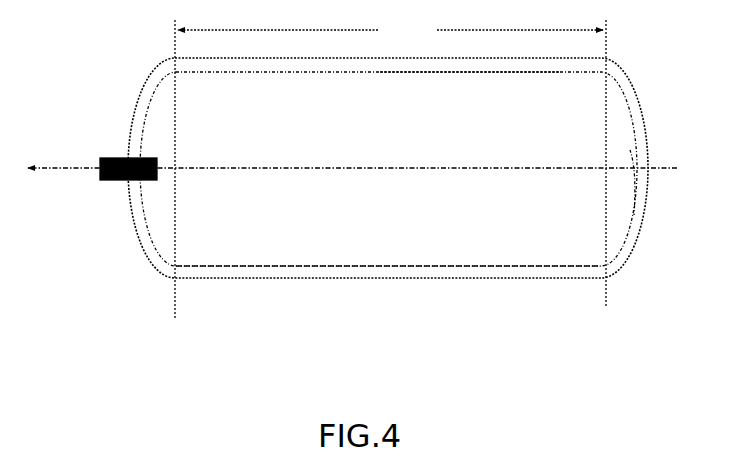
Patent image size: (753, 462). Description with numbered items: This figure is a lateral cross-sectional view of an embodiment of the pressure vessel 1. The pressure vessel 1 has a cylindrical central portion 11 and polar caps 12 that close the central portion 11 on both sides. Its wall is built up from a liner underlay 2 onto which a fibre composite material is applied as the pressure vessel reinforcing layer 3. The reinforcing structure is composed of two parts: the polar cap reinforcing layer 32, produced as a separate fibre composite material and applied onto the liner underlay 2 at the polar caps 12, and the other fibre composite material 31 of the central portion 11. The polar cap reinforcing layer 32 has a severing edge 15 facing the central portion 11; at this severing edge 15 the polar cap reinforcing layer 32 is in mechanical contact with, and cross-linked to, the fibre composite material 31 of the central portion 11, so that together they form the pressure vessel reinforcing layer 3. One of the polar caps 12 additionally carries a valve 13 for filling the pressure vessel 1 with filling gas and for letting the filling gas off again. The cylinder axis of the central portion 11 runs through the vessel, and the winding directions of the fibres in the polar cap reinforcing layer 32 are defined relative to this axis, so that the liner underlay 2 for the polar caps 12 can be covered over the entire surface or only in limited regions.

The pressure vessel 1 is at (88, 39).
The liner underlay 2 is at (251, 262).
The pressure vessel reinforcing layer 3 is at (388, 169).
The cylindrical central portion 11 is at (390, 32).
The polar cap 12 is at (129, 240).
The valve 13 is at (108, 155).
The severing edge 15 is at (391, 183).
The fibre composite material of the central portion 31 is at (474, 64).
The polar cap reinforcing layer 32 is at (641, 215).